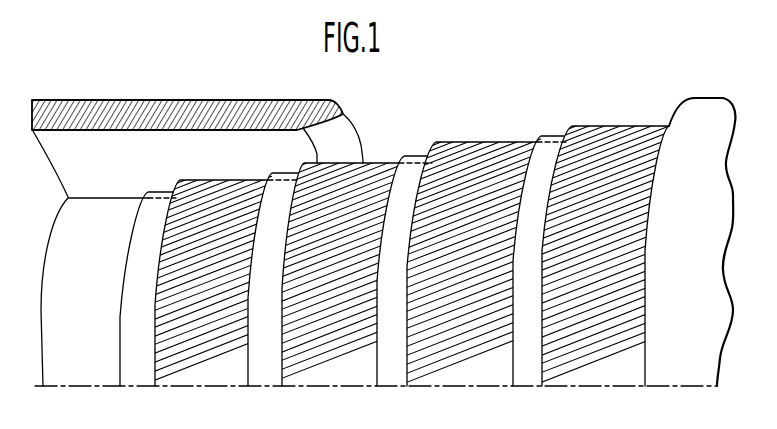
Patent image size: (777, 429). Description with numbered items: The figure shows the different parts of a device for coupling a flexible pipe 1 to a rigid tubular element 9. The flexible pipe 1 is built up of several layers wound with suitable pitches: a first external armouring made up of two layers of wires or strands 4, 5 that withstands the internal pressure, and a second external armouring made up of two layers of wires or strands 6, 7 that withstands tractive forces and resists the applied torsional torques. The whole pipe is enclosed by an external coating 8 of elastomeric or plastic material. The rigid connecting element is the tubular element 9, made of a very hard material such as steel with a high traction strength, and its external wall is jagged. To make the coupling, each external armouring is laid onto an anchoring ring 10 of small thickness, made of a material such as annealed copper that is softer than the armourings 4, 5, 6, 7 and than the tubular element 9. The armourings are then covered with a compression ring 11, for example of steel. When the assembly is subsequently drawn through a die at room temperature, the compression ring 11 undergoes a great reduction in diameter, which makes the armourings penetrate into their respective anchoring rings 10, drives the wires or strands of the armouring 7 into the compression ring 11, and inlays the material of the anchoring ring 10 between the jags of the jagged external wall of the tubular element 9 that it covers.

The flexible pipe 1 is at (714, 242).
The layer of wires or strands 4 is at (197, 377).
The layer of wires or strands 5 is at (328, 374).
The wires or strands 6 is at (456, 374).
The wires or strands 7 is at (577, 374).
The external coating 8 is at (683, 128).
The tubular element 9 is at (92, 377).
The anchoring ring 10 is at (137, 377).
The compression ring 11 is at (59, 108).